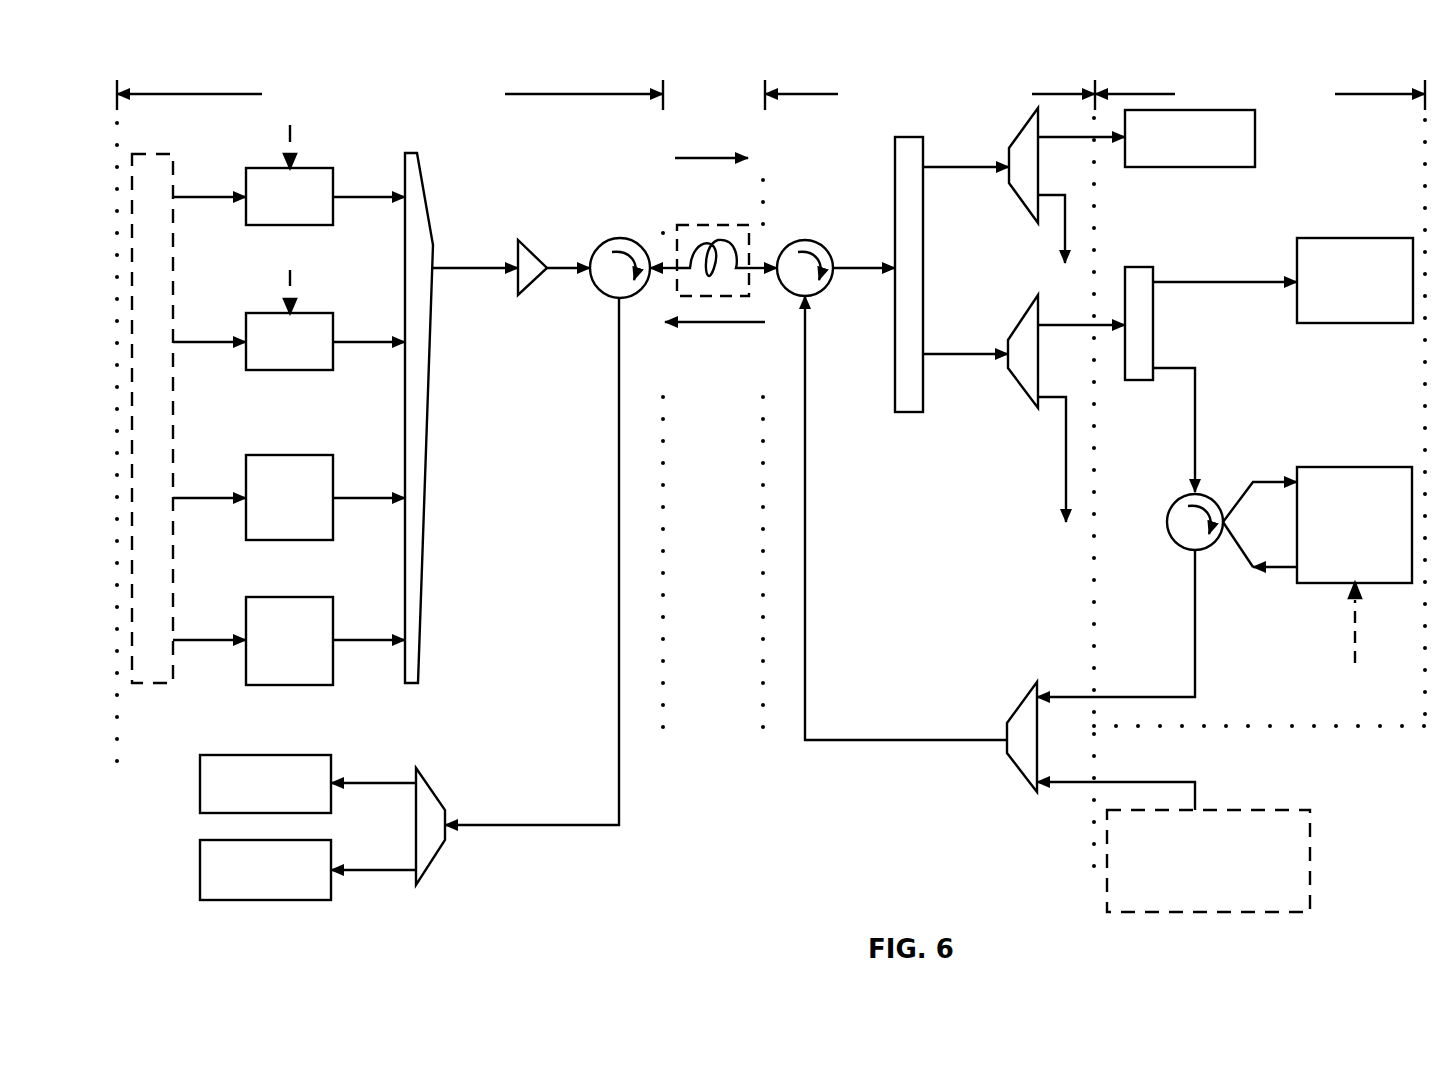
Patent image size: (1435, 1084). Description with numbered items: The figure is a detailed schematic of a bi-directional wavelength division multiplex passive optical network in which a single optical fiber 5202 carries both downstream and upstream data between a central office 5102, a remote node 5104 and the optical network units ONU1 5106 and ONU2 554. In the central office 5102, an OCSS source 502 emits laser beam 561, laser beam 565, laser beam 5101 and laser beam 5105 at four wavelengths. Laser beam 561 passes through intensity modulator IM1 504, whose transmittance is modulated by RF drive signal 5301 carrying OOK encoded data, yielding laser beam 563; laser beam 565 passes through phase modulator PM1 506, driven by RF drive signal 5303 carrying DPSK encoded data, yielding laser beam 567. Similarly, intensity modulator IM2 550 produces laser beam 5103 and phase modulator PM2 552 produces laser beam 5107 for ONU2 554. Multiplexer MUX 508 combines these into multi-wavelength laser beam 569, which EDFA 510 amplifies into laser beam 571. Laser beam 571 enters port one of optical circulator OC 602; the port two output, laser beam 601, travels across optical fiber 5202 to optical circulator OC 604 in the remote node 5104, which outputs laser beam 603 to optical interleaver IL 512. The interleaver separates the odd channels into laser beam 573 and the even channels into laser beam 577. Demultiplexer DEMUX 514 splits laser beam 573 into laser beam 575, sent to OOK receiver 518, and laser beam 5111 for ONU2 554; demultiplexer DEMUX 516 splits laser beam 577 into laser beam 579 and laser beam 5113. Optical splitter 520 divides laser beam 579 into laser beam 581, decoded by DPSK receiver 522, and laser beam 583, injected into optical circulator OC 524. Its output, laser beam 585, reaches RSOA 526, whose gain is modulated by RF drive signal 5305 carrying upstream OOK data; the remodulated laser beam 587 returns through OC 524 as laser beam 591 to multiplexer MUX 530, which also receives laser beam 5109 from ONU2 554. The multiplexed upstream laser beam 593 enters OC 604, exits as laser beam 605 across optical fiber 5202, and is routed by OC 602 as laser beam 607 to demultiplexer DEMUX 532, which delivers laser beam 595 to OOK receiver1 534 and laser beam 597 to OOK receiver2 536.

The central office 5102 is at (390, 95).
The remote node 5104 is at (930, 99).
The ONU1 5106 is at (1260, 95).
The OCSS source 502 is at (151, 440).
The intensity modulator IM1 504 is at (258, 227).
The phase modulator PM1 506 is at (258, 372).
The intensity modulator IM2 550 is at (289, 515).
The phase modulator PM2 552 is at (289, 658).
The RF drive signal 5301 is at (317, 146).
The RF drive signal 5303 is at (317, 291).
The laser beam 561 is at (209, 200).
The laser beam 563 is at (369, 200).
The laser beam 565 is at (209, 345).
The laser beam 567 is at (369, 345).
The laser beam 5101 is at (209, 503).
The laser beam 5103 is at (369, 503).
The laser beam 5105 is at (209, 645).
The laser beam 5107 is at (369, 645).
The multiplexer MUX 508 is at (443, 418).
The multi-wavelength laser beam 569 is at (478, 266).
The erbium doped fiber amplifier EDFA 510 is at (518, 294).
The amplified laser beam 571 is at (560, 270).
The optical circulator OC 602 is at (616, 270).
The optical fiber 5202 is at (700, 225).
The laser beam 601 is at (720, 160).
The laser beam 605 is at (715, 352).
The optical circulator OC 604 is at (838, 345).
The laser beam 603 is at (838, 266).
The optical interleaver IL 512 is at (896, 292).
The demultiplexer DEMUX 514 is at (991, 181).
The demultiplexer DEMUX 516 is at (998, 371).
The laser beam 573 is at (966, 173).
The laser beam 577 is at (965, 355).
The laser beam 575 is at (1081, 141).
The laser beam 5111 is at (1122, 212).
The laser beam 579 is at (1081, 327).
The laser beam 5113 is at (1042, 448).
The OOK receiver 518 is at (1214, 138).
The DPSK receiver 522 is at (1355, 268).
The optical splitter 520 is at (1176, 337).
The laser beam 581 is at (1225, 269).
The laser beam 583 is at (1197, 430).
The optical circulator OC 524 is at (1175, 532).
The reflective semiconductor optical amplifier RSOA 526 is at (1354, 513).
The laser beam 585 is at (1260, 489).
The laser beam 587 is at (1260, 562).
The RF drive signal 5305 is at (1351, 646).
The laser beam 591 is at (1131, 623).
The multiplexer MUX 530 is at (1027, 742).
The laser beam 5109 is at (1116, 784).
The ONU2 554 is at (1235, 861).
The multi-wavelength laser beam 593 is at (906, 518).
The laser beam 607 is at (532, 561).
The demultiplexer DEMUX 532 is at (470, 839).
The OOK receiver1 534 is at (241, 784).
The OOK receiver2 536 is at (241, 870).
The laser beam 595 is at (373, 785).
The laser beam 597 is at (373, 872).